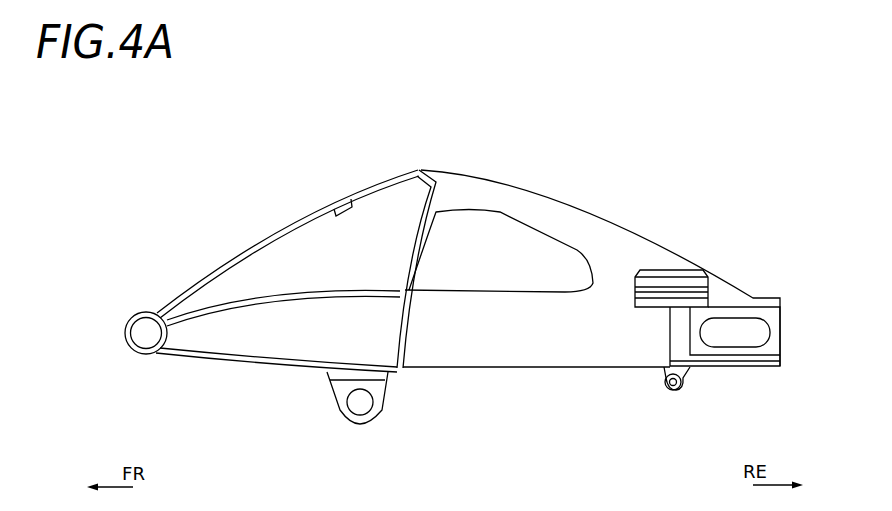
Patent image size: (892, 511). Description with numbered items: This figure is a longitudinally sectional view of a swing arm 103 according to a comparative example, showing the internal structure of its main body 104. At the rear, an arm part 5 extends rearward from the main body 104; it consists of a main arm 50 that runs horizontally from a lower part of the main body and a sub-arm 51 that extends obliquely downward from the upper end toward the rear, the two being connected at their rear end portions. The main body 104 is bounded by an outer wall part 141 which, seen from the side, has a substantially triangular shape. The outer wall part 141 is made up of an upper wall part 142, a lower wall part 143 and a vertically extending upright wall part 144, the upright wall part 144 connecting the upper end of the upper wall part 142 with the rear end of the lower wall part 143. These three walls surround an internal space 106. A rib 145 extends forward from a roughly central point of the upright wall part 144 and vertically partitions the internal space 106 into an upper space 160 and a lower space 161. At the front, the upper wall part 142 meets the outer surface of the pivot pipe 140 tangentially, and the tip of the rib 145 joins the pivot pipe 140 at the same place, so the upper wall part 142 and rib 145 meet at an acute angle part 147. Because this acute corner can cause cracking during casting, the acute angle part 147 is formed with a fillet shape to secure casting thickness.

The arm part 5 is at (676, 156).
The main arm 50 is at (570, 347).
The sub-arm 51 is at (525, 192).
The swing arm 103 is at (173, 137).
The main body 104 is at (189, 195).
The internal space 106 is at (383, 141).
The pivot pipe 140 is at (134, 354).
The outer wall part 141 is at (272, 244).
The upper wall part 142 is at (253, 252).
The lower wall part 143 is at (238, 366).
The upright wall part 144 is at (401, 334).
The rib 145 is at (238, 308).
The acute angle part 147 is at (186, 303).
The upper space 160 is at (354, 244).
The lower space 161 is at (318, 316).